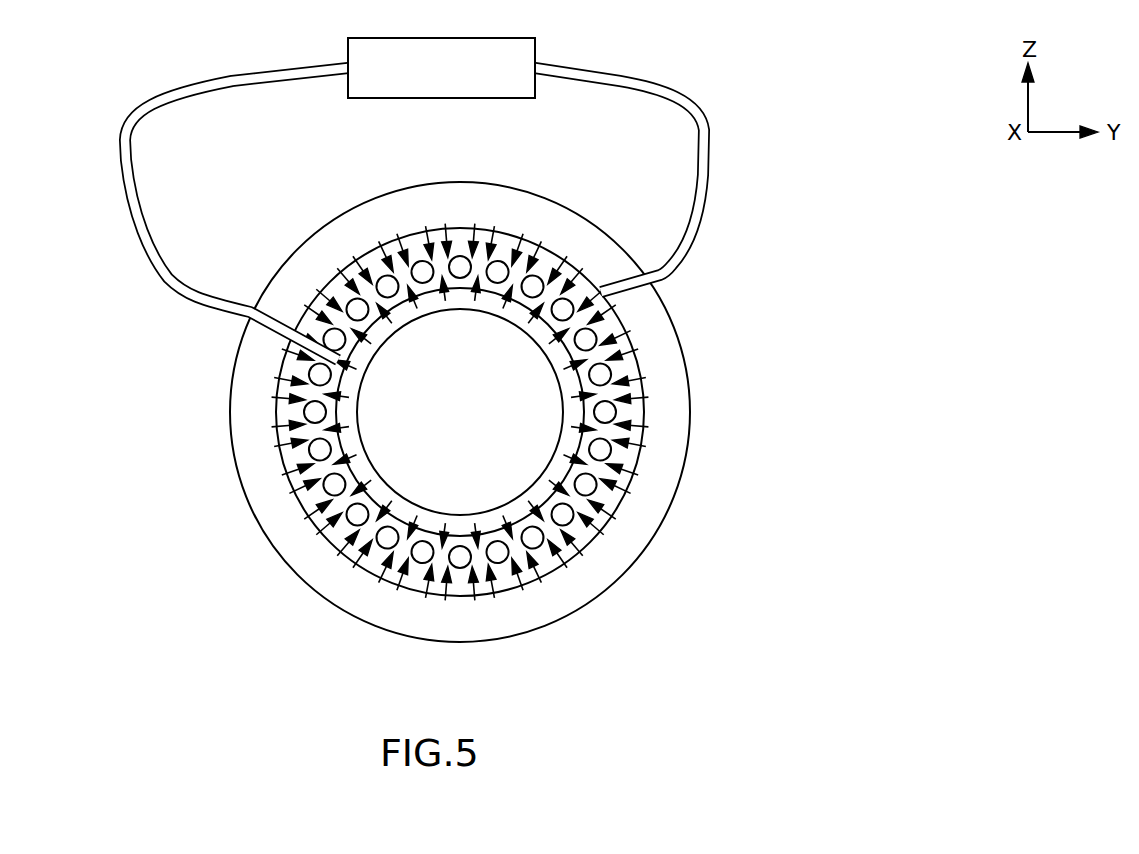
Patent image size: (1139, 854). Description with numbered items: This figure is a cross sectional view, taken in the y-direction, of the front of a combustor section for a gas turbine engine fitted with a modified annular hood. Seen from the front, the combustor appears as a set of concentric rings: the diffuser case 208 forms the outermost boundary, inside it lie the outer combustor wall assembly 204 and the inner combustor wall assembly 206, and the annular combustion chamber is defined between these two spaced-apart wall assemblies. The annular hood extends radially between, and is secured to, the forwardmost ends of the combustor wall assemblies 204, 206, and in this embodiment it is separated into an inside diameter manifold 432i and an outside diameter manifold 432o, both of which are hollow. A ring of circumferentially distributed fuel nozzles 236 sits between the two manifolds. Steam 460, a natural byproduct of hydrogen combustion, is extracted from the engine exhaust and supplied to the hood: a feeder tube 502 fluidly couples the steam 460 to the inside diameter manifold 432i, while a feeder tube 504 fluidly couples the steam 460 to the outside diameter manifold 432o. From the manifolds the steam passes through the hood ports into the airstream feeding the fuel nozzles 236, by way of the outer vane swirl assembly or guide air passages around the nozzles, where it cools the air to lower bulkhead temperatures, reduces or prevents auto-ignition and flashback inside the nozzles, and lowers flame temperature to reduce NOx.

The outer combustor wall assembly 204 is at (478, 514).
The inner combustor wall assembly 206 is at (275, 417).
The diffuser case 208 is at (657, 287).
The fuel nozzles 236 is at (583, 529).
The inside diameter manifold 432i is at (411, 516).
The outside diameter manifold 432o is at (282, 362).
The steam 460 is at (358, 43).
The feeder tube 502 is at (248, 306).
The feeder tube 504 is at (638, 270).